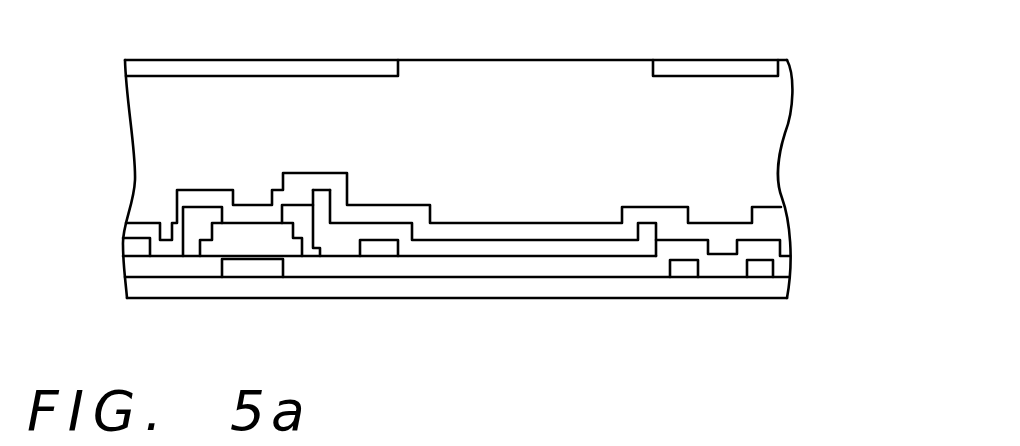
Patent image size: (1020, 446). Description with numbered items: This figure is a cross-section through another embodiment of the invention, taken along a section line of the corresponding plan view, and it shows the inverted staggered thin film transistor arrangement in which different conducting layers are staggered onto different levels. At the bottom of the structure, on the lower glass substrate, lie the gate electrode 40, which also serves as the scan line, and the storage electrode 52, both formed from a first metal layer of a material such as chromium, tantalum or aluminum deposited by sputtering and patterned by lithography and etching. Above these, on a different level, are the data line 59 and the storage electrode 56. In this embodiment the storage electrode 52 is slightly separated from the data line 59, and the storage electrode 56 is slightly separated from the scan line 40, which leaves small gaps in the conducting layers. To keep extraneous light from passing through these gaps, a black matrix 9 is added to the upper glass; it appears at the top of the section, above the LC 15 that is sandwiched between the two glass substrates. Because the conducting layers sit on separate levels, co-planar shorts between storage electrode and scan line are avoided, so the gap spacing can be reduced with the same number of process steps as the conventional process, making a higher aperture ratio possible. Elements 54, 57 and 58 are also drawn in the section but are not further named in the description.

The black matrix 9 is at (291, 60).
The LC 15 is at (523, 103).
The gate electrode 40 is at (255, 270).
The storage electrode 52 is at (682, 270).
The semiconductor layer 54 is at (255, 228).
The storage electrode 56 is at (378, 250).
The drain electrode 57 is at (388, 228).
The substrate 58 is at (530, 228).
The data line 59 is at (307, 222).